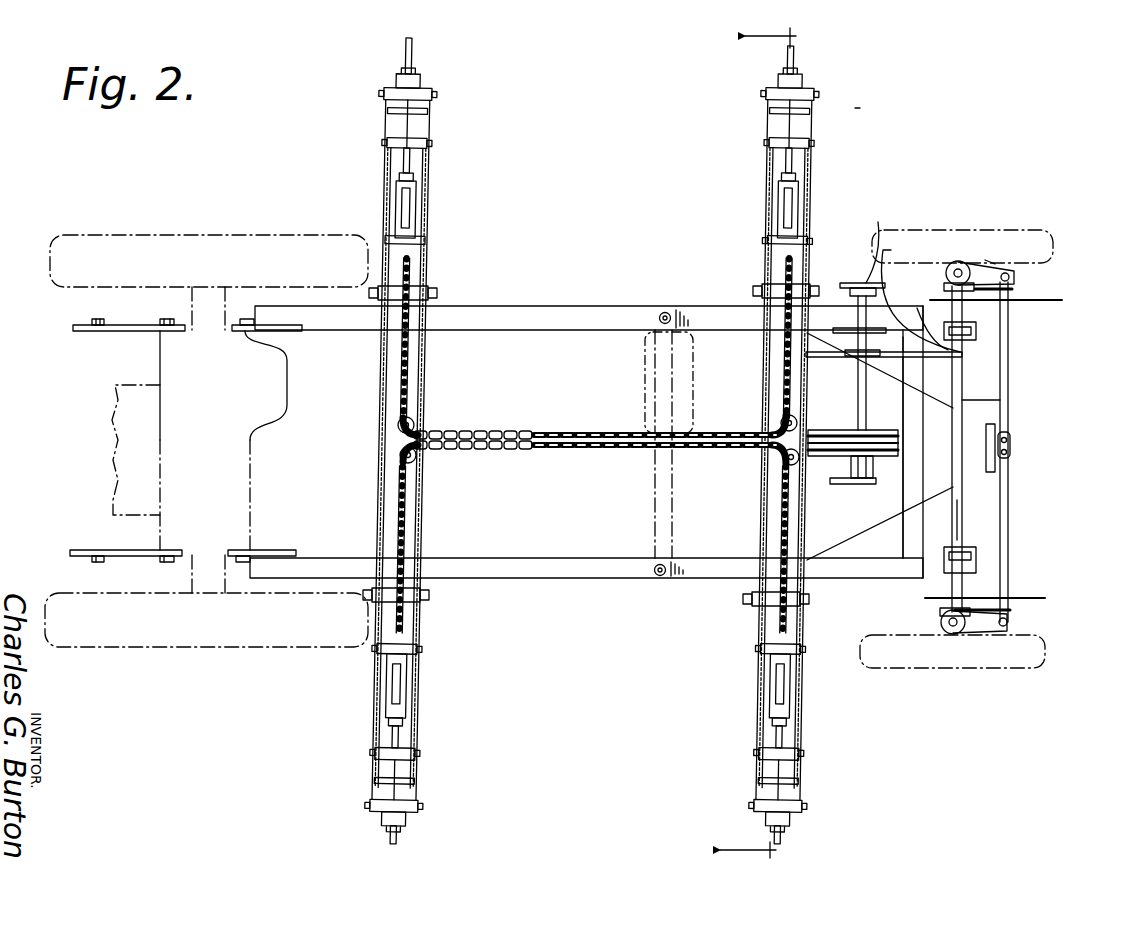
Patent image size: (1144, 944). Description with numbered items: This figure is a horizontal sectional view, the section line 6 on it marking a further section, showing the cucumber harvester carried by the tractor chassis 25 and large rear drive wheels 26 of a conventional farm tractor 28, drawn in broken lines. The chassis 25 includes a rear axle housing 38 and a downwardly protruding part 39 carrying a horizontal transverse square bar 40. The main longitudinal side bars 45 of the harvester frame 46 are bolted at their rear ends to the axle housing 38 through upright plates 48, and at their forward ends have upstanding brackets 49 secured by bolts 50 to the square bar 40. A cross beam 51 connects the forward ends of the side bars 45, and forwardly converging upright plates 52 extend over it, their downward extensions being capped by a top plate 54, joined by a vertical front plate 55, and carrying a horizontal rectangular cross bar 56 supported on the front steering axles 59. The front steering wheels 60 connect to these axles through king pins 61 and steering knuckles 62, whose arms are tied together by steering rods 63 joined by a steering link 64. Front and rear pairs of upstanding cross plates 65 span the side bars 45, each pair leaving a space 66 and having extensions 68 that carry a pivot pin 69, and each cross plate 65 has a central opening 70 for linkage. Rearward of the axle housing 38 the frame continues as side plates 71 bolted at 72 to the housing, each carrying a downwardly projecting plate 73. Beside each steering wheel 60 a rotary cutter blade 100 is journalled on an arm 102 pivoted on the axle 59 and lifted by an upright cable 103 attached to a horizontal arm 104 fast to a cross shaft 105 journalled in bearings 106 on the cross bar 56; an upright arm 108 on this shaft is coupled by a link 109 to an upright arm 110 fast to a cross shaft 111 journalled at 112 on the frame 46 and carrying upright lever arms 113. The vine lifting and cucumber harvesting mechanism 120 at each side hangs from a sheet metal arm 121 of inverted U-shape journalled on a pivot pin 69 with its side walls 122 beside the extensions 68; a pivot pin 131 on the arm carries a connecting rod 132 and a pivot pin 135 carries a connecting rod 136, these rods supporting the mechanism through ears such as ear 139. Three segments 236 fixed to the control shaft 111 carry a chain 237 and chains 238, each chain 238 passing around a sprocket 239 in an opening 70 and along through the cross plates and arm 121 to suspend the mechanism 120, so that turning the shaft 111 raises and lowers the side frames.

The section line 6- 6 is at (774, 449).
The tractor chassis 25 is at (112, 402).
The rear drive wheels 26 is at (126, 234).
The farm tractor 28 is at (212, 234).
The rear axle housing 38 is at (254, 460).
The downwardly protruding part 39 is at (645, 375).
The transverse square bar 40 is at (656, 531).
The main longitudinal side bars 45 is at (556, 308).
The harvester frame 46 is at (586, 441).
The upright plate 48 is at (246, 333).
The upstanding bracket 49 is at (668, 312).
The bolt 50 is at (665, 327).
The cross beam 51 is at (906, 546).
The forwardly converging upright plates 52 is at (880, 446).
The top plate 54 is at (985, 428).
The vertical front plate 55 is at (990, 462).
The horizontal rectangular cross bar 56 is at (964, 521).
The front steering axles 59 is at (966, 264).
The front steering wheels 60 is at (1013, 228).
The king pin 61 is at (960, 268).
The steering knuckle 62 is at (992, 262).
The steering rods 63 is at (1009, 378).
The steering link 64 is at (1012, 447).
The upstanding cross plates 65 is at (423, 359).
The space 66 is at (423, 509).
The extensions 68 is at (384, 290).
The pivot pin 69 is at (374, 592).
The opening 70 is at (418, 420).
The side plates 71 is at (78, 332).
The bolts 72 is at (178, 324).
The plate 73 is at (82, 324).
The rotary cutter blade 100 is at (1062, 300).
The arm 102 is at (1014, 291).
The upright cable 103 is at (1014, 270).
The horizontal arm 104 is at (955, 285).
The cross shaft 105 is at (965, 385).
The bearings 106 is at (978, 335).
The upright arm 108 is at (946, 300).
The link 109 is at (920, 295).
The upright arm 110 is at (884, 442).
The cross shaft 111 is at (875, 468).
The journal 112 is at (858, 326).
The upright lever arms 113 is at (858, 516).
The vine lifting and cucumber harvesting mechanism 120 is at (858, 108).
The sheet metal arm 121 is at (430, 262).
The side walls 122 is at (386, 160).
The pivot pin 131 is at (418, 655).
The connecting rod 132 is at (400, 205).
The pivot pin 135 is at (433, 96).
The connecting rod 136 is at (414, 78).
The upstanding ear 139 is at (405, 41).
The segments 236 is at (898, 454).
The chain 237 is at (610, 437).
The chain 238 is at (400, 345).
The sprocket 239 is at (416, 462).